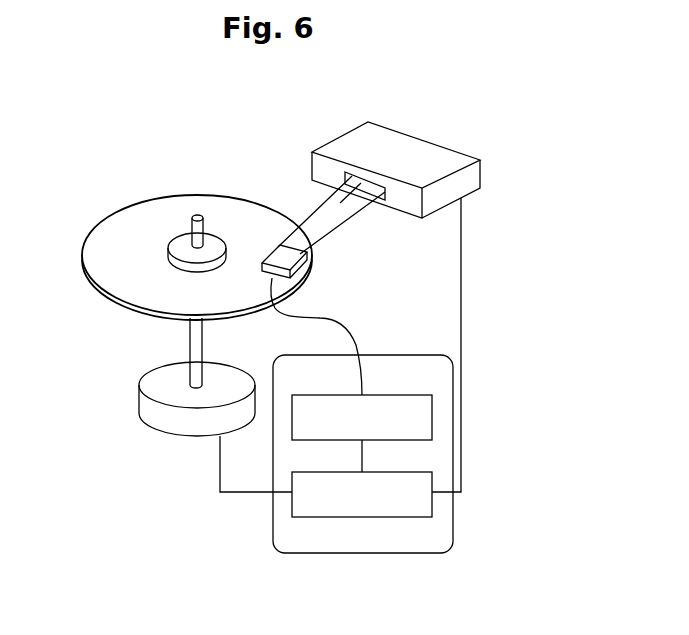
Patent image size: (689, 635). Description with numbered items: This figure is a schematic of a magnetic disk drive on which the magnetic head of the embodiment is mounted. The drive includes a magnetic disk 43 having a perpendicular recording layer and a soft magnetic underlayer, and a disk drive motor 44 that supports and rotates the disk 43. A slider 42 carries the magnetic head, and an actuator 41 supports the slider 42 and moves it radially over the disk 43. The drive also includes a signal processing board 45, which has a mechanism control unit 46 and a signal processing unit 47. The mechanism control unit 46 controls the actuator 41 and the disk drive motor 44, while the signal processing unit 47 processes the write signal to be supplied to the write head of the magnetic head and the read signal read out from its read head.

The actuator 41 is at (417, 108).
The slider 42 is at (317, 265).
The magnetic disk 43 is at (117, 302).
The disk drive motor 44 is at (193, 425).
The signal processing board 45 is at (280, 513).
The mechanism control unit 46 is at (422, 517).
The signal processing unit 47 is at (405, 400).